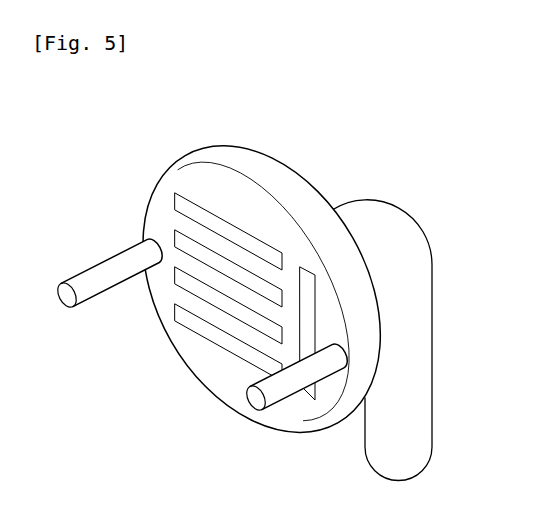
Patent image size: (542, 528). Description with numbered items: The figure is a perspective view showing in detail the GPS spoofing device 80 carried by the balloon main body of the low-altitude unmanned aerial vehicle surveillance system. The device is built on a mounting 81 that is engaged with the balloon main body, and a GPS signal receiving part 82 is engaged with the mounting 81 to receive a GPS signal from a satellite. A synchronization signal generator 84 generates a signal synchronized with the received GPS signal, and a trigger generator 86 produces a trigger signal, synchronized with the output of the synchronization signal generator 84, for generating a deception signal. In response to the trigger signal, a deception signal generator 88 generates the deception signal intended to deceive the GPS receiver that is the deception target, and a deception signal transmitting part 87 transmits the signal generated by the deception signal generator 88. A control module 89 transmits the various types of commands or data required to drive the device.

The GPS spoofing device 80 is at (347, 177).
The mounting 81 is at (408, 368).
The GPS signal receiving part 82 is at (273, 390).
The synchronization signal generator 84 is at (192, 212).
The trigger generator 86 is at (182, 242).
The deception signal transmitting part 87 is at (92, 272).
The deception signal generator 88 is at (188, 282).
The control module 89 is at (202, 325).